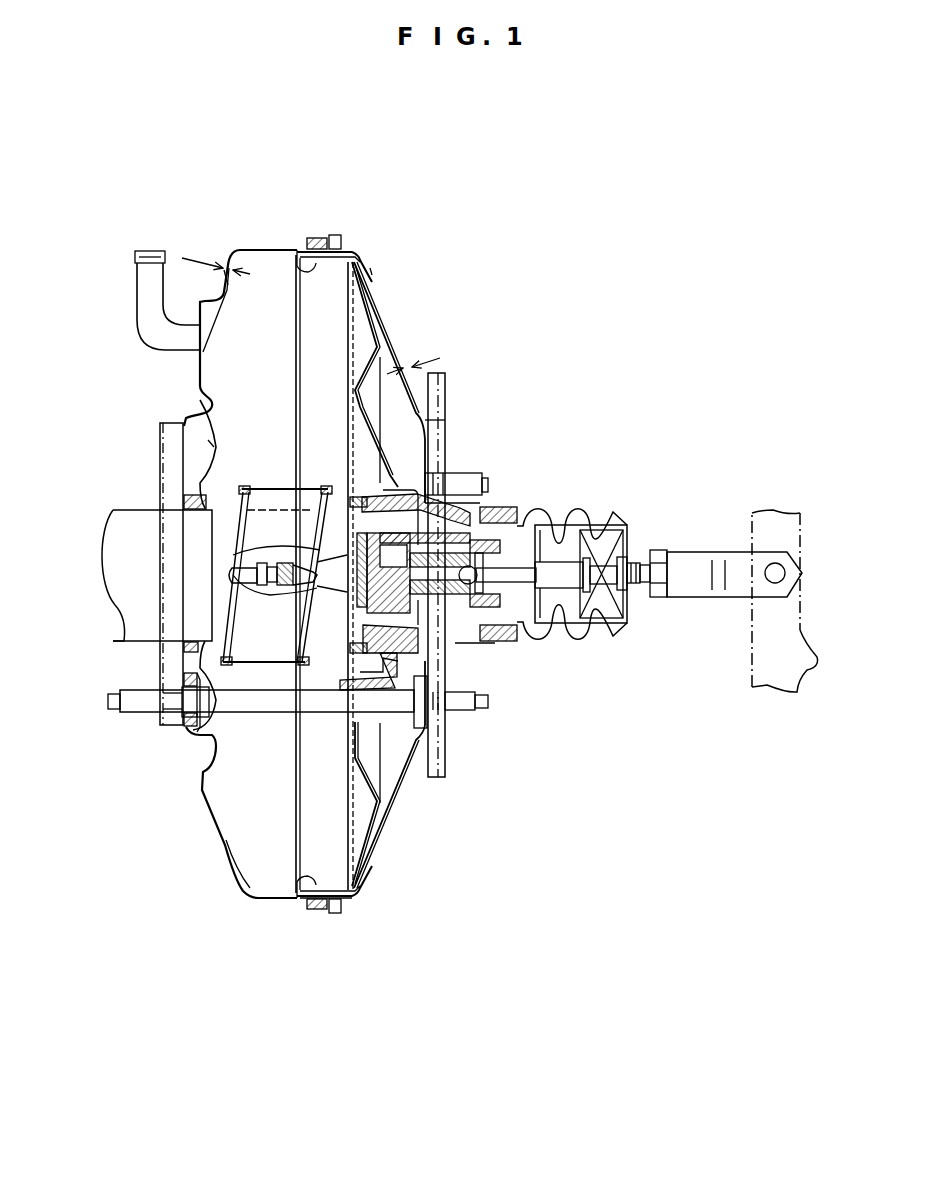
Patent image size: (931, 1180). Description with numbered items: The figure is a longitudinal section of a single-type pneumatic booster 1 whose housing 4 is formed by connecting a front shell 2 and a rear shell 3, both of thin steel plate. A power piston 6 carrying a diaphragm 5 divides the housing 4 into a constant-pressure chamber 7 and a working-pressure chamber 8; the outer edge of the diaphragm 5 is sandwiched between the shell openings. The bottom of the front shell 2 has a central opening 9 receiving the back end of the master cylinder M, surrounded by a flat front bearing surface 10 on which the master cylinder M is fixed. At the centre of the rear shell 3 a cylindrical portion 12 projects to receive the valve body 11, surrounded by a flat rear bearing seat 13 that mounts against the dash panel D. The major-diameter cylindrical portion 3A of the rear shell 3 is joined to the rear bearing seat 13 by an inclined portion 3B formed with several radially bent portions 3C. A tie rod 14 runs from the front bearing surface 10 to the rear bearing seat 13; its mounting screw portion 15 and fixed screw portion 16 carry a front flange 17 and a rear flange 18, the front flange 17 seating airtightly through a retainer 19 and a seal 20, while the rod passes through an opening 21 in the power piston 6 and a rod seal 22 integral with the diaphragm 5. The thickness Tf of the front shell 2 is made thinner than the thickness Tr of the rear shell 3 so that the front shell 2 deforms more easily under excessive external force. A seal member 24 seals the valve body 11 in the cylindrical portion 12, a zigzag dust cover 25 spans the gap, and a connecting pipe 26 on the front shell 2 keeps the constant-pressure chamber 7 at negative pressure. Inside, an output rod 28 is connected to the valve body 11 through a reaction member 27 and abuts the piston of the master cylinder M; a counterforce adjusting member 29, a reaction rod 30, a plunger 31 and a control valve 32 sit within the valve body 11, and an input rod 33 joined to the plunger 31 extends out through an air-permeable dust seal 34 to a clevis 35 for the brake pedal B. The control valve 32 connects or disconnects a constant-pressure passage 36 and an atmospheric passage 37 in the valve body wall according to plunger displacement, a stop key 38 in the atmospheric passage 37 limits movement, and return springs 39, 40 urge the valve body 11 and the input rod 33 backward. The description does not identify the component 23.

The pneumatic booster 1 is at (452, 215).
The front shell 2 is at (290, 262).
The rear shell 3 is at (355, 252).
The major-diameter cylindrical portion 3A is at (340, 914).
The inclined portion 3B is at (393, 850).
The bent portions 3C is at (395, 820).
The housing 4 is at (362, 162).
The diaphragm 5 is at (297, 253).
The power piston 6 is at (363, 295).
The constant-pressure chamber 7 is at (250, 862).
The working-pressure chamber 8 is at (390, 783).
The central opening 9 is at (187, 512).
The front bearing surface 10 is at (187, 490).
The valve body 11 is at (450, 510).
The cylindrical portion 12 is at (475, 647).
The rear bearing seat 13 is at (430, 430).
The tie rod 14 is at (215, 727).
The mounting screw portion 15 is at (133, 710).
The fixed screw portion 16 is at (456, 712).
The front flange 17 is at (180, 735).
The rear flange 18 is at (403, 727).
The retainer 19 is at (184, 671).
The seal 20 is at (200, 687).
The opening 21 is at (302, 857).
The rod seal 22 is at (297, 760).
The nut 23 is at (450, 497).
The seal member 24 is at (503, 520).
The dust cover 25 is at (617, 517).
The connecting pipe 26 is at (136, 259).
The reaction member 27 is at (325, 517).
The output rod 28 is at (233, 578).
The counterforce adjusting member 29 is at (313, 622).
The reaction rod 30 is at (462, 647).
The plunger 31 is at (513, 493).
The control valve 32 is at (547, 640).
The input rod 33 is at (607, 560).
The dust seal 34 is at (600, 630).
The clevis 35 is at (737, 596).
The constant-pressure passage 36 is at (480, 513).
The atmospheric passage 37 is at (485, 647).
The stop key 38 is at (495, 647).
The return spring 39 is at (215, 452).
The return spring 40 is at (573, 523).
The thickness of the front shell Tf is at (203, 262).
The thickness of the rear shell Tr is at (430, 357).
The dash panel D is at (443, 385).
The master cylinder M is at (132, 527).
The brake pedal B is at (782, 534).